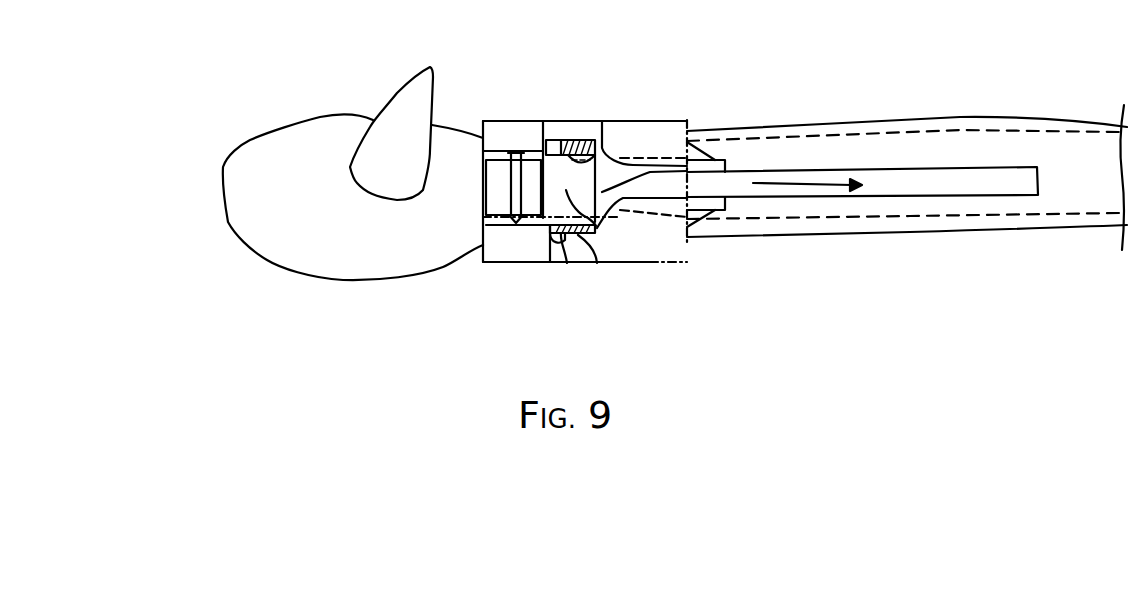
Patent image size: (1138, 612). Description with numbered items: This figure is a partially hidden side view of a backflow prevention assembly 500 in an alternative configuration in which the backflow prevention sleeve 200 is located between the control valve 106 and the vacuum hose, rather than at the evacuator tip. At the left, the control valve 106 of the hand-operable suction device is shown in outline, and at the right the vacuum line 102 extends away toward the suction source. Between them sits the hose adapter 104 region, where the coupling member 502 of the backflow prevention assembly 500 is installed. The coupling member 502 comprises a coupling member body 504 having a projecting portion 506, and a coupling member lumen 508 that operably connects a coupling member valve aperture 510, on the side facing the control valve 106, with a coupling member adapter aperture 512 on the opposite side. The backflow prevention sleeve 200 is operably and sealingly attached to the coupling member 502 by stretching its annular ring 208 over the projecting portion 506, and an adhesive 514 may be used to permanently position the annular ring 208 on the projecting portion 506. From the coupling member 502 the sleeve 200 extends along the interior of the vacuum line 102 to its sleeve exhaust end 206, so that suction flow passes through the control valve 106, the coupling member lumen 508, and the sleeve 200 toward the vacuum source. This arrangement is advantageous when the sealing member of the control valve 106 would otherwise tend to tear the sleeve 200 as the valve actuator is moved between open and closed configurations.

The vacuum line 102 is at (823, 124).
The hose adapter 104 is at (630, 263).
The control valve 106 is at (308, 277).
The backflow prevention sleeve 200 is at (640, 158).
The sleeve exhaust end 206 is at (1037, 167).
The annular ring 208 is at (567, 263).
The backflow prevention assembly 500 is at (533, 121).
The coupling member 502 is at (497, 121).
The coupling member body 504 is at (500, 263).
The projecting portion 506 is at (598, 121).
The coupling member lumen 508 is at (600, 222).
The coupling member valve aperture 510 is at (482, 200).
The coupling member adapter aperture 512 is at (662, 158).
The adhesive 514 is at (597, 263).